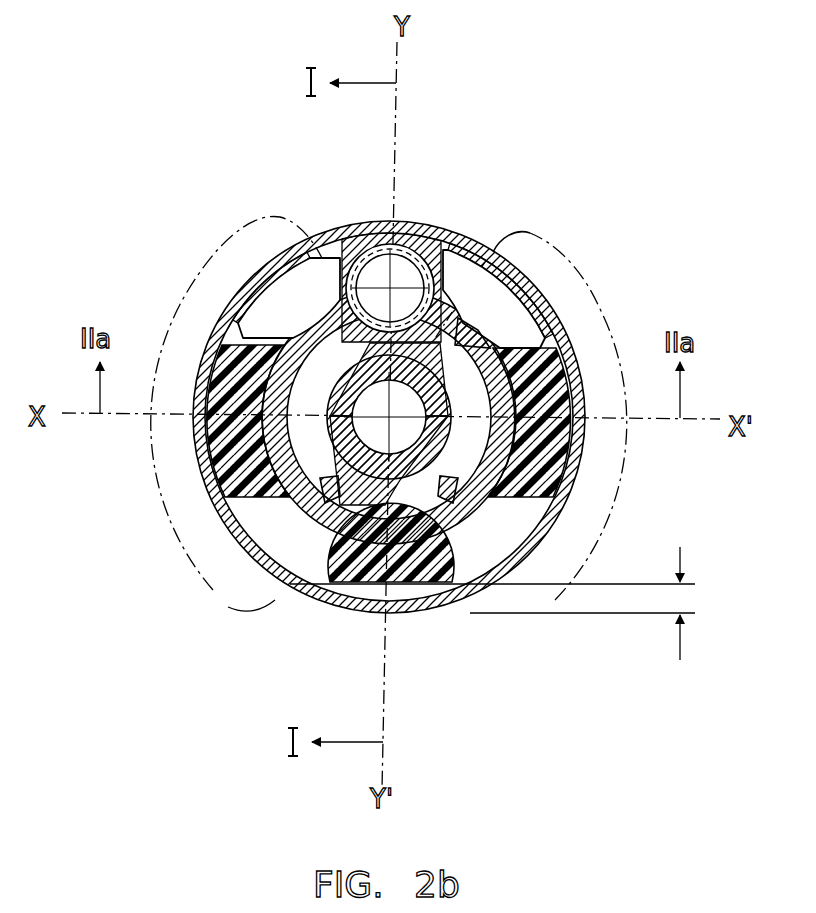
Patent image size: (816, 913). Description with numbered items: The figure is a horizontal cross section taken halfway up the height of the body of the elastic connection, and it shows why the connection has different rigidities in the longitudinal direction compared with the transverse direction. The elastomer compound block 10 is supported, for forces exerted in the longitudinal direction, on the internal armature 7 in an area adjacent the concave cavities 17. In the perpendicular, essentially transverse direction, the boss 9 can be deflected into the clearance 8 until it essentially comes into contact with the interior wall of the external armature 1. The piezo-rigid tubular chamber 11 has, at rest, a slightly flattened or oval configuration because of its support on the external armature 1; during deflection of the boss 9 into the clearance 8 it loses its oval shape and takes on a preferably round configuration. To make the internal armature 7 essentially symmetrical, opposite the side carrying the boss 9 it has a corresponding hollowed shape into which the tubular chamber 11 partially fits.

The external armature 1 is at (260, 555).
The internal armature 7 is at (478, 332).
The clearance 8 is at (497, 606).
The boss 9 is at (378, 548).
The elastomer compound block 10 is at (210, 340).
The piezo-rigid tubular chamber 11 is at (380, 282).
The concave cavities 17 is at (332, 488).